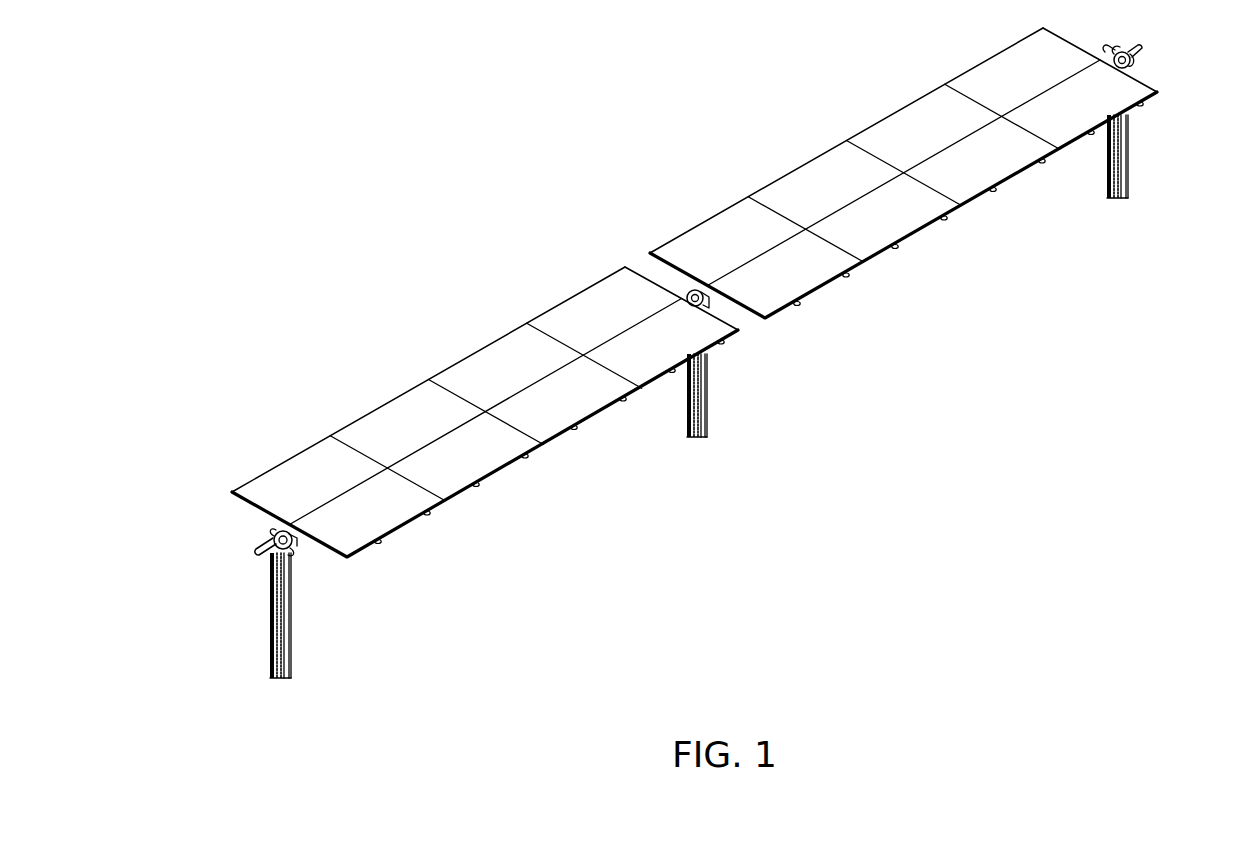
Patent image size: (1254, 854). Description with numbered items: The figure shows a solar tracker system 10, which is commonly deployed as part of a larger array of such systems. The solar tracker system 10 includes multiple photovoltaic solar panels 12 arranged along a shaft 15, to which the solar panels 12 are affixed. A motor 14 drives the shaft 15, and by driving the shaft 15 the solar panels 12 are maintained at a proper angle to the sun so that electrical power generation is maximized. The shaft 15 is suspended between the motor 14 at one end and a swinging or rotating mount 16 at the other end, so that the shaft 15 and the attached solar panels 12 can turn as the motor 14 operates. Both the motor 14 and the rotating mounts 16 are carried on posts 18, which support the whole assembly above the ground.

The solar tracker system 10 is at (415, 262).
The photovoltaic solar panels 12 is at (430, 378).
The motor 14 is at (698, 283).
The shaft 15 is at (257, 557).
The rotating mount 16 is at (270, 531).
The posts 18 is at (293, 634).